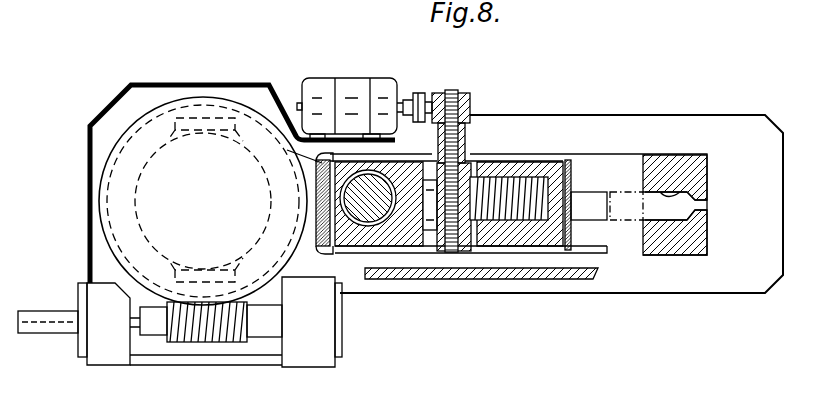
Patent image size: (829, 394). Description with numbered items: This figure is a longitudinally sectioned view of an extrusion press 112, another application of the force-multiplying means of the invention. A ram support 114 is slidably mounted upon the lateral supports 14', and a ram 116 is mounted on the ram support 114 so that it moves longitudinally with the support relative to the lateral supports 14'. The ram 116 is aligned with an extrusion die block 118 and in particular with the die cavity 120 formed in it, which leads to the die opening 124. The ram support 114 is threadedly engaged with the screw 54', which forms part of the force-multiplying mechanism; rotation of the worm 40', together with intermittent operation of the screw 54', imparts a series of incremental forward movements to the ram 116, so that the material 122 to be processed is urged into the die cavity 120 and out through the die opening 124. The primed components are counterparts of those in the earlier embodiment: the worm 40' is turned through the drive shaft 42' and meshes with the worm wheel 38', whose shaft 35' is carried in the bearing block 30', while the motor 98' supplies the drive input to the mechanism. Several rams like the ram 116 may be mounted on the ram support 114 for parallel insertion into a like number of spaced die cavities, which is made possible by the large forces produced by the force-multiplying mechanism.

The lateral supports 14' is at (436, 169).
The worm wheel 38' is at (170, 201).
The bearing block 30' is at (386, 250).
The shaft 35' is at (320, 198).
The extrusion press 112 is at (492, 95).
The motor 98' is at (364, 86).
The screw 54' is at (516, 250).
The ram support 114 is at (570, 180).
The ram 116 is at (590, 192).
The material 122 is at (625, 190).
The extrusion die block 118 is at (680, 153).
The die cavity 120 is at (667, 195).
The die opening 124 is at (693, 213).
The worm 40' is at (210, 335).
The drive shaft 42' is at (48, 297).